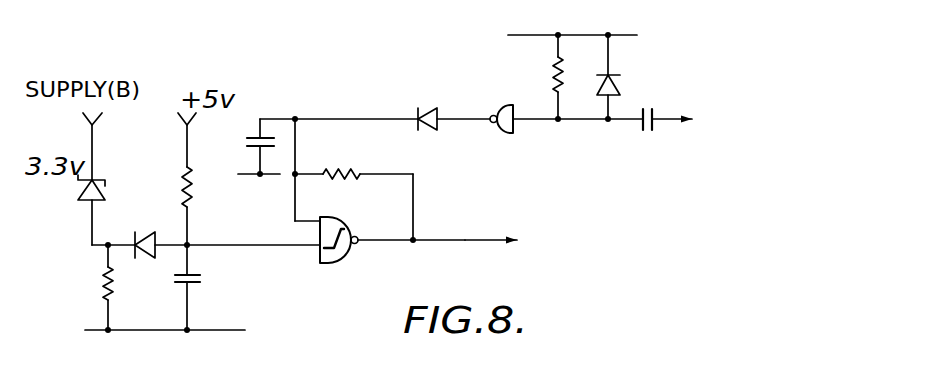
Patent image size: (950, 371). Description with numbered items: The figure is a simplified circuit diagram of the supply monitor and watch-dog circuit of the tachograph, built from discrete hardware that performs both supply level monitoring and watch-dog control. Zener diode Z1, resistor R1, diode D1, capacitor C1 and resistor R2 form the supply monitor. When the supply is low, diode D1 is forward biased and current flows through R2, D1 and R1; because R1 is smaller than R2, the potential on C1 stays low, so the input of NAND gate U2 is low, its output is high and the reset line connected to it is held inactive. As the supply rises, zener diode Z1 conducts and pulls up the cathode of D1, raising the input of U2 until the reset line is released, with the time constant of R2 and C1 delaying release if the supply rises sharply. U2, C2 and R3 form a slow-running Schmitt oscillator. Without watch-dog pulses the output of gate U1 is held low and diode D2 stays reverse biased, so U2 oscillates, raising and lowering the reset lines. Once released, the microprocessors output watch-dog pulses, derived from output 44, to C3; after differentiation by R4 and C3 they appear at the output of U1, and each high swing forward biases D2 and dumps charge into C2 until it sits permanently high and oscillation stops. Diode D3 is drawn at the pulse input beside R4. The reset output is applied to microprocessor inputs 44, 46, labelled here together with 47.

The zener diode Z1 is at (114, 199).
The diode D1 is at (146, 230).
The resistor R1 is at (87, 287).
The resistor R2 is at (208, 206).
The resistor R3 is at (354, 189).
The resistor R4 is at (540, 77).
The capacitor C1 is at (210, 287).
The capacitor C2 is at (250, 148).
The capacitor C3 is at (649, 104).
The diode D2 is at (448, 102).
The diode D3 is at (627, 77).
The gate U1 is at (503, 135).
The NAND gate U2 is at (339, 257).
The output of microprocessor 44 is at (687, 137).
The input of microprocessor 46 is at (525, 242).
The RESET output to element 47 is at (578, 242).